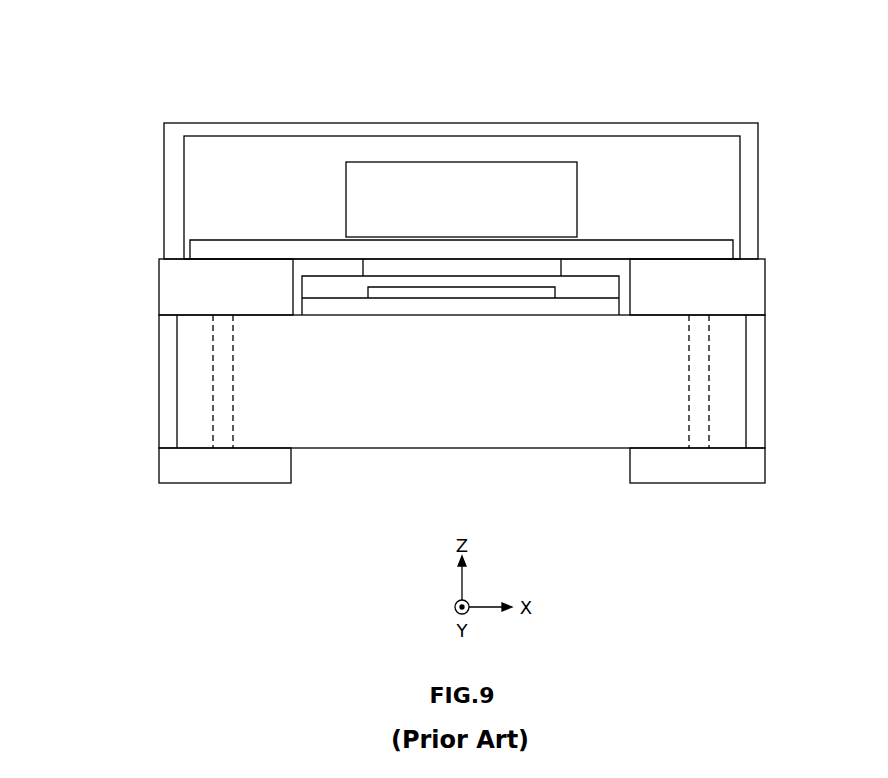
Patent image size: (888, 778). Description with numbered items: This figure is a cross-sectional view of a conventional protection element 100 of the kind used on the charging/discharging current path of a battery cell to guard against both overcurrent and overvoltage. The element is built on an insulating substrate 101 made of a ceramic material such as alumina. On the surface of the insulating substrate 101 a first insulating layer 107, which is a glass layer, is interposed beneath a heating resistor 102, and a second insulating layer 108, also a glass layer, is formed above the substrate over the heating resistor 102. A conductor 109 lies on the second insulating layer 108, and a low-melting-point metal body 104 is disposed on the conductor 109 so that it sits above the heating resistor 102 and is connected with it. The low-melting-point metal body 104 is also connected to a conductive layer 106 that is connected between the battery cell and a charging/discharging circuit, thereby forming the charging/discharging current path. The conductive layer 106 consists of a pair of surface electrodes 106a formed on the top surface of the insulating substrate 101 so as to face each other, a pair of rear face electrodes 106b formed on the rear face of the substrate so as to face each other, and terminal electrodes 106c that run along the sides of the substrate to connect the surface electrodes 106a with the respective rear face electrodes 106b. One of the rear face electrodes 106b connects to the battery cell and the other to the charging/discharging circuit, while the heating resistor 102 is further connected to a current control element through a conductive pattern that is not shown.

The protection element 100 is at (461, 47).
The insulating substrate 101 is at (185, 357).
The heating resistor 102 is at (455, 292).
The low-melting-point metal body 104 is at (387, 250).
The conductive layer 106 is at (462, 373).
The surface electrodes 106a is at (170, 298).
The rear face electrodes 106b is at (170, 470).
The terminal electrodes 106c is at (207, 400).
The first insulating layer 107 is at (347, 308).
The second insulating layer 108 is at (318, 287).
The conductor 109 is at (520, 267).